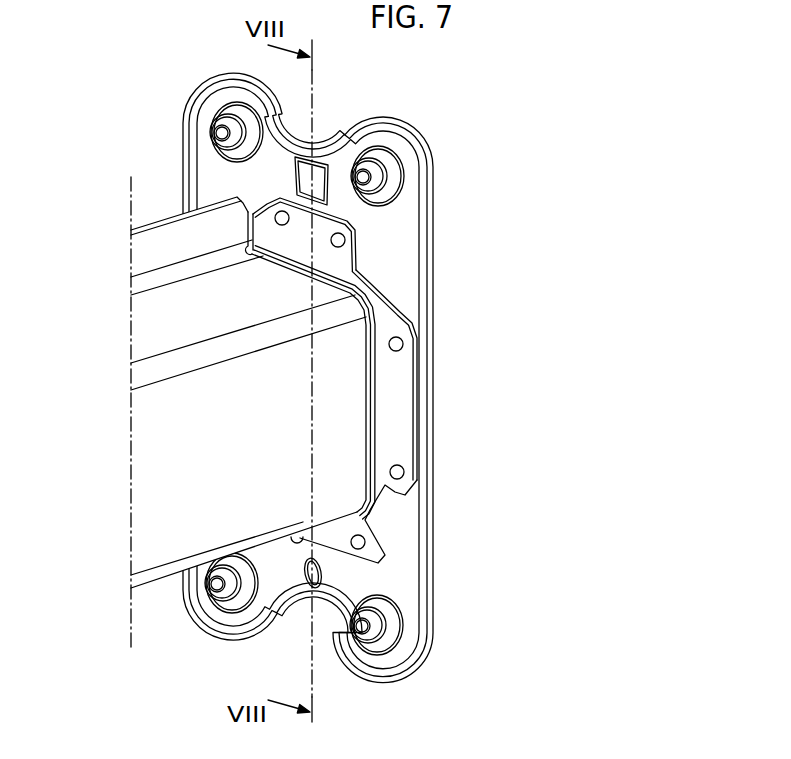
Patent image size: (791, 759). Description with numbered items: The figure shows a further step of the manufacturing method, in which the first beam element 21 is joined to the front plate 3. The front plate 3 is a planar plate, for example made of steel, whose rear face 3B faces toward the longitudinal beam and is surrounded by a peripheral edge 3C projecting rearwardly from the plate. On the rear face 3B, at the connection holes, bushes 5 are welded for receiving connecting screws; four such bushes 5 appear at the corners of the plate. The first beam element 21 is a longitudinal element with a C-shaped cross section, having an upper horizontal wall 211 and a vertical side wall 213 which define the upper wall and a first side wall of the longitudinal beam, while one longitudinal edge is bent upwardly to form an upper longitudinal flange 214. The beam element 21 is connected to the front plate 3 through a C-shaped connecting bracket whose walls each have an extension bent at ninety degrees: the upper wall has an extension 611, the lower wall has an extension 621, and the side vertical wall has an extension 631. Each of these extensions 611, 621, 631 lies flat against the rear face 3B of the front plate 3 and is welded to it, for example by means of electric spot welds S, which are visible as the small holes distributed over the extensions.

The front plate 3 is at (292, 377).
The rear face 3B is at (411, 217).
The peripheral edge 3C is at (190, 148).
The bushes 5 is at (213, 121).
The electric spot welds S is at (282, 211).
The first beam element 21 is at (205, 397).
The upper horizontal wall 211 is at (167, 330).
The vertical side wall 213 is at (167, 456).
The upper longitudinal flange 214 is at (152, 242).
The extension of the upper wall 611 is at (335, 253).
The extension of the lower wall 621 is at (385, 565).
The extension of the side wall 631 is at (387, 412).